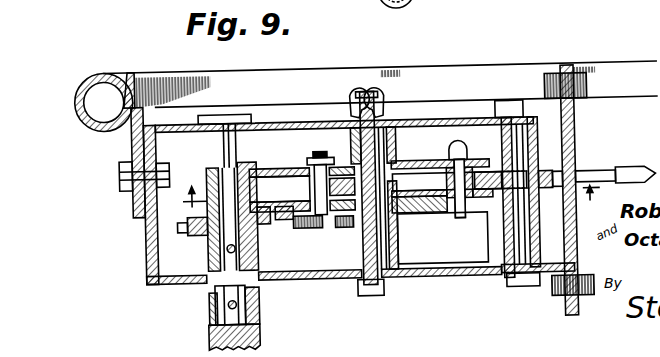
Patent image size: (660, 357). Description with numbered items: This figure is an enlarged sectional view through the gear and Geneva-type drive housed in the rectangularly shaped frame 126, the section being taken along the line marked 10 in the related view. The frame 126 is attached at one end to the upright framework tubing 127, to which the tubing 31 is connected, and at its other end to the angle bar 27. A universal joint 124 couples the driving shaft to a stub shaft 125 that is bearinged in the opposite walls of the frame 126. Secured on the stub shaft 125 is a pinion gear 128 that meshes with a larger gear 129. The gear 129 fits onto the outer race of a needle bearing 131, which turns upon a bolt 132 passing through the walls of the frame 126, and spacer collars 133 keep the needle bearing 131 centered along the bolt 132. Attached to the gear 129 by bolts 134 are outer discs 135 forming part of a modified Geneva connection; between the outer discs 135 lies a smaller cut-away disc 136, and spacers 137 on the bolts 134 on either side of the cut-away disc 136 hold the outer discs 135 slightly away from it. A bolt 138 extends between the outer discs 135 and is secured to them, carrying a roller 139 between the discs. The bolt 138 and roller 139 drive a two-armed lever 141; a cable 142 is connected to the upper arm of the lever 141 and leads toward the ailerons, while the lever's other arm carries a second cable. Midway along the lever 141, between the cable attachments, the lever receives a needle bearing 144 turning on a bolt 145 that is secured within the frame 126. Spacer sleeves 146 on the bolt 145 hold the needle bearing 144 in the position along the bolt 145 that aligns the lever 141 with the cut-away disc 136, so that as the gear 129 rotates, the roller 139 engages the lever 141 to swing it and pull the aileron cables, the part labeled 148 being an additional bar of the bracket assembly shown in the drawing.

The bolt / section line 10 is at (366, 185).
The angle bar 27 is at (574, 149).
The tubing 31 is at (494, 72).
The universal joint 124 is at (252, 330).
The stub shaft 125 is at (222, 293).
The frame 126 is at (292, 122).
The framework tubing 127 is at (104, 130).
The pinion gear 128 is at (193, 234).
The gear 129 is at (294, 230).
The needle bearing 131 is at (344, 231).
The bolt 132 is at (442, 239).
The spacer collars 133 is at (388, 148).
The bolts 134 is at (319, 149).
The outer discs 135 is at (279, 196).
The cut-away disc 136 is at (311, 179).
The spacers 137 is at (308, 159).
The bolt 138 is at (446, 218).
The roller 139 is at (446, 163).
The two-armed lever 141 is at (495, 192).
The cable 142 is at (622, 176).
The needle bearing 144 is at (544, 193).
The bolt 145 is at (528, 294).
The spacer sleeves 146 is at (548, 164).
The bracket bar 148 is at (414, 214).